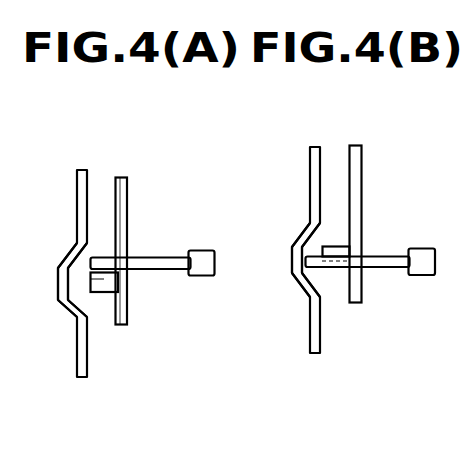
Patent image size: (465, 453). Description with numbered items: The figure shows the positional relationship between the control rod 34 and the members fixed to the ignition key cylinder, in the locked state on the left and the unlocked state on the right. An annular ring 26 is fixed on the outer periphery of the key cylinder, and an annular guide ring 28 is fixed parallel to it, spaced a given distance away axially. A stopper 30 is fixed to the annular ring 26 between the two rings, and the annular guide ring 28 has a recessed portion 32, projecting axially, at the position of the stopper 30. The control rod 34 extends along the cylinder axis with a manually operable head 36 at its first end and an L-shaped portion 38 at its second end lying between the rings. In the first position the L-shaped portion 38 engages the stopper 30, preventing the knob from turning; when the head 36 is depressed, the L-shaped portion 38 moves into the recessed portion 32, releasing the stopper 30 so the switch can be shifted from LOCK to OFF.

In FIG. 4A, the annular ring 26 is at (128, 191).
In FIG. 4B, the annular ring 26 is at (361, 162).
In FIG. 4A, the annular guide ring 28 is at (80, 352).
In FIG. 4B, the annular guide ring 28 is at (312, 337).
In FIG. 4A, the stopper 30 is at (103, 293).
In FIG. 4B, the stopper 30 is at (341, 246).
In FIG. 4A, the recessed portion 32 is at (58, 272).
In FIG. 4B, the recessed portion 32 is at (292, 252).
In FIG. 4A, the control rod 34 is at (163, 270).
In FIG. 4B, the control rod 34 is at (383, 268).
In FIG. 4A, the manually operable head 36 is at (202, 262).
In FIG. 4B, the manually operable head 36 is at (430, 249).
In FIG. 4A, the L-shaped portion 38 is at (86, 261).
In FIG. 4B, the L-shaped portion 38 is at (305, 262).